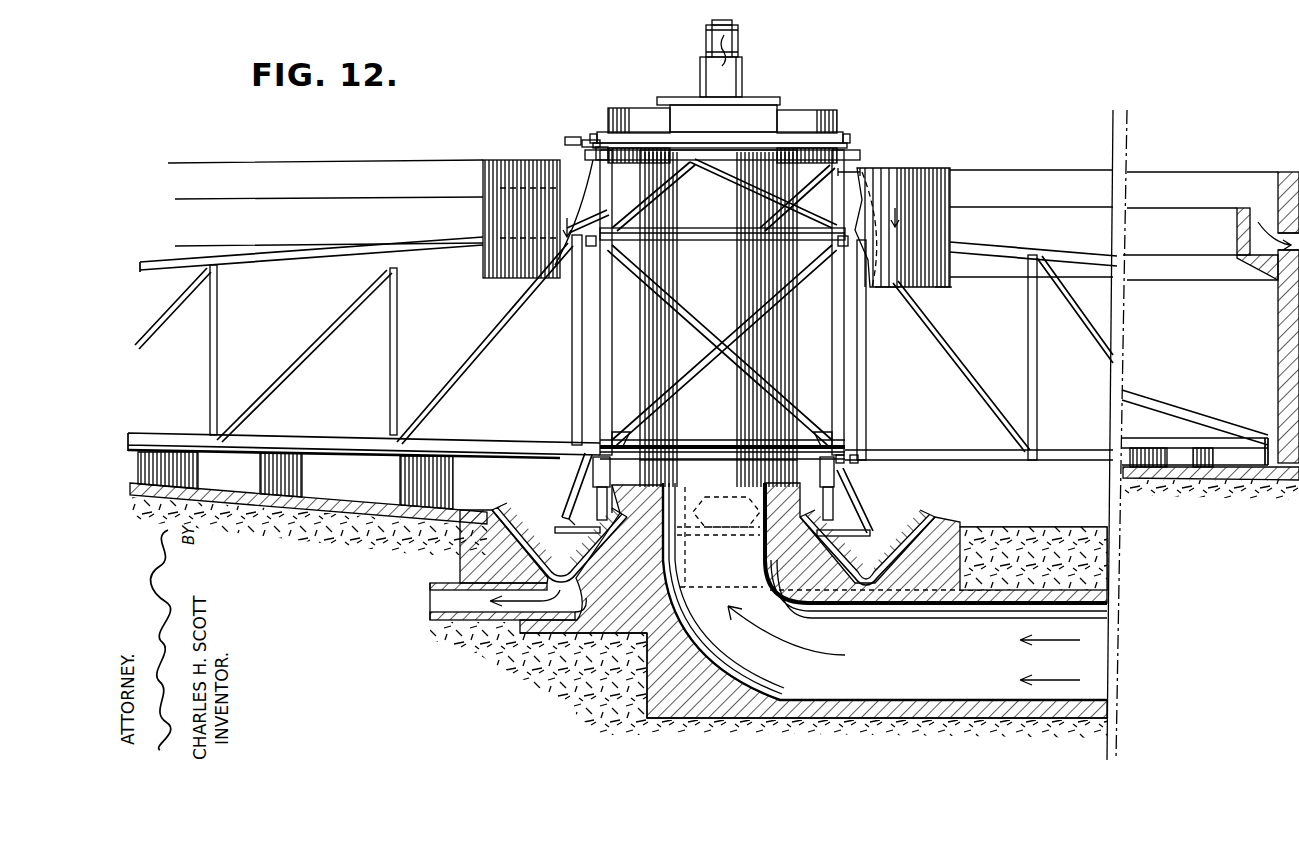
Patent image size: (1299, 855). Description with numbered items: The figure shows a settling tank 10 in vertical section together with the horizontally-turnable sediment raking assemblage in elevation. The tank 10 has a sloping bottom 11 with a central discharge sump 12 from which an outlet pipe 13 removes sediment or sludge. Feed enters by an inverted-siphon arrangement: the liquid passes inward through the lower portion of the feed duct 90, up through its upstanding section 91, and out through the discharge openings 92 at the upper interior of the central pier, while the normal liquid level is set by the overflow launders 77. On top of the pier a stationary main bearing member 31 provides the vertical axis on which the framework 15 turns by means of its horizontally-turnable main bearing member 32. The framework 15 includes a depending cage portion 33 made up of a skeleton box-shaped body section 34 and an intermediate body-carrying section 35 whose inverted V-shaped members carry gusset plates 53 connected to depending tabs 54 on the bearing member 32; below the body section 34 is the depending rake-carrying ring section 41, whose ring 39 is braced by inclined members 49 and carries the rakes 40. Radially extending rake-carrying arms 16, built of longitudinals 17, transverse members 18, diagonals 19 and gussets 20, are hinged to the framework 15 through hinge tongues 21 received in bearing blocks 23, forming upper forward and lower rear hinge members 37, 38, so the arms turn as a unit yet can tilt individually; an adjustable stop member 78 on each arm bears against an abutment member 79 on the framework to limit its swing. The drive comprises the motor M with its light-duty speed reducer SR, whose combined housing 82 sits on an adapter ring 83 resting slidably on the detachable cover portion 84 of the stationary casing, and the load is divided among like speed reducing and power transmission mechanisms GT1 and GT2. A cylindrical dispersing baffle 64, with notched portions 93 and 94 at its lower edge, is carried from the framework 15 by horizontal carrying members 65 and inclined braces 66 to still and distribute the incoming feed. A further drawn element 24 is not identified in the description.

The motor M is at (705, 36).
The speed reducing and power transmission mechanism SR is at (708, 78).
The speed reducing and power transmission mechanism GT1 is at (630, 122).
The speed reducing and power transmission mechanism GT2 is at (800, 128).
The combined housing 82 is at (740, 70).
The adapter ring 83 is at (748, 98).
The cover portion 84 is at (772, 103).
The framework 15 is at (525, 160).
The horizontally-turnable main bearing member 32 is at (575, 140).
The depending tabs 54 is at (598, 140).
The gusset plates 53 is at (597, 153).
The stationary main bearing member 31 is at (625, 161).
The intermediate body-carrying section 35 is at (600, 208).
The discharge openings 92 is at (722, 199).
The carrying members 65 is at (845, 170).
The inclined braces 66 is at (888, 172).
The cylindrical baffle 64 is at (942, 170).
The longitudinally extending members 17 is at (260, 263).
The gussets 20 is at (387, 274).
The hinge member 38 is at (590, 246).
The upstanding section 91 is at (721, 318).
The notched portions 93 is at (882, 288).
The notched portions 94 is at (945, 289).
The overflow launders 77 is at (1175, 207).
The settling tank 10 is at (1211, 317).
The transverse members 18 is at (217, 352).
The rake carrying arms 16 is at (688, 349).
The diagonals 19 is at (486, 345).
The skeleton box-shaped body section 34 is at (619, 302).
The depending cage portion 33 is at (845, 354).
The hinge member 37 is at (596, 446).
The hinge tongues 21 is at (570, 486).
The bearing blocks 23 is at (575, 498).
The depending rake-carrying ring section 41 is at (612, 488).
The inclined members 49 is at (556, 507).
The abutment member 79 is at (840, 461).
The adjustable stop member 78 is at (856, 461).
The rakes 40 is at (530, 560).
The rake-carrying ring 39 is at (867, 547).
The sloping bottom 11 is at (200, 492).
The floor slab 24 is at (296, 485).
The discharge sump 12 is at (440, 546).
The outlet pipe 13 is at (430, 600).
The feed duct 90 is at (783, 600).